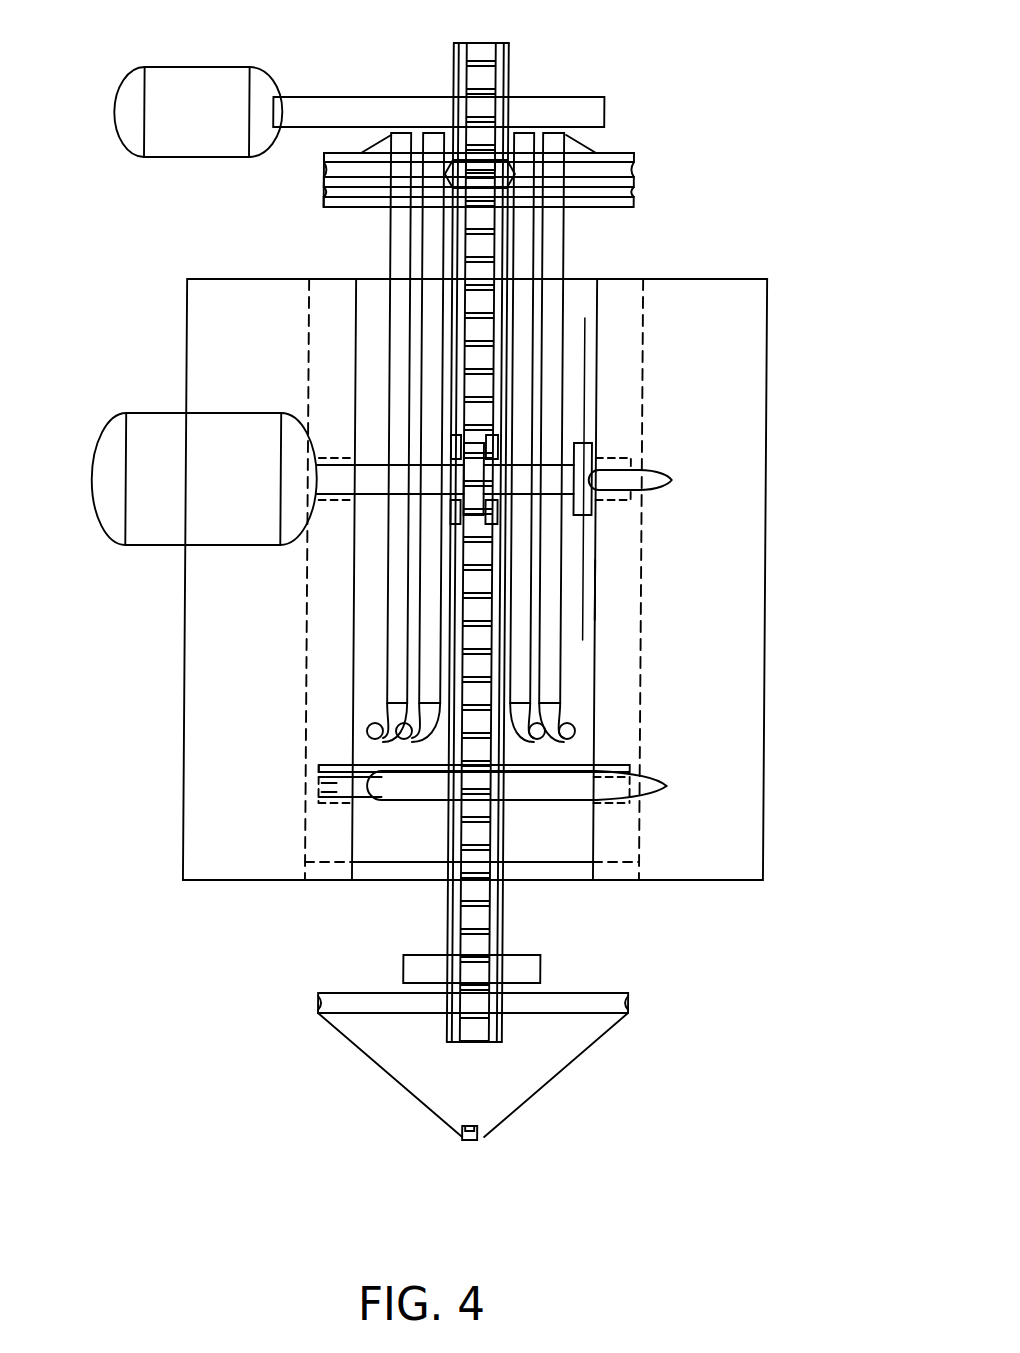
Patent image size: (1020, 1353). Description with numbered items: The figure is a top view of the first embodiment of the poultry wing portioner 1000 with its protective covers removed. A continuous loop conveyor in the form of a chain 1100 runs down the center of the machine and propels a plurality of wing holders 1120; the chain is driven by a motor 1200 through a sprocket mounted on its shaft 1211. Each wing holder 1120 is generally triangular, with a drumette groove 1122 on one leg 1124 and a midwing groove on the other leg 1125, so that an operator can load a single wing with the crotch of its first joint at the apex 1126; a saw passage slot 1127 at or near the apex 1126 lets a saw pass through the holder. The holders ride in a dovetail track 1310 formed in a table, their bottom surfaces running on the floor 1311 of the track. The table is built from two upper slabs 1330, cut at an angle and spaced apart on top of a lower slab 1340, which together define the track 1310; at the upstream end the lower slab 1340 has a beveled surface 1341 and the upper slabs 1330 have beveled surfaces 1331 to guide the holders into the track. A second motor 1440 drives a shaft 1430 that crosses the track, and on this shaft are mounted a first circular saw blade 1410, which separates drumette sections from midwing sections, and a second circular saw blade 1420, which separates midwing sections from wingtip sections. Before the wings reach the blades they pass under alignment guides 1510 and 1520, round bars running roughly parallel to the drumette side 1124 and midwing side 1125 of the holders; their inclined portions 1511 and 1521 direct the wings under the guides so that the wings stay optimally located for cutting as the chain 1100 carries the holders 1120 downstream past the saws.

The portioner 1000 is at (200, 945).
The chain 1100 is at (490, 387).
The wing holder 1120 is at (345, 150).
The drumette groove 1122 is at (330, 172).
The leg (drumette side) 1124 is at (320, 1018).
The leg (midwing side) 1125 is at (633, 1018).
The apex 1126 is at (472, 1147).
The saw passage slot 1127 is at (485, 170).
The motor 1200 is at (197, 66).
The shaft 1211 is at (380, 96).
The dovetail track 1310 is at (598, 585).
The floor 1311 is at (622, 740).
The upper slab 1330 is at (198, 797).
The beveled surface 1331 is at (641, 846).
The lower slab 1340 is at (575, 405).
The beveled surface 1341 is at (385, 884).
The first circular saw blade 1410 is at (470, 425).
The second circular saw blade 1420 is at (587, 365).
The shaft 1430 is at (340, 497).
The motor 1440 is at (157, 412).
The alignment guide 1510 is at (432, 310).
The inclined portion 1511 is at (400, 726).
The alignment guide 1520 is at (553, 312).
The inclined portion 1521 is at (578, 726).